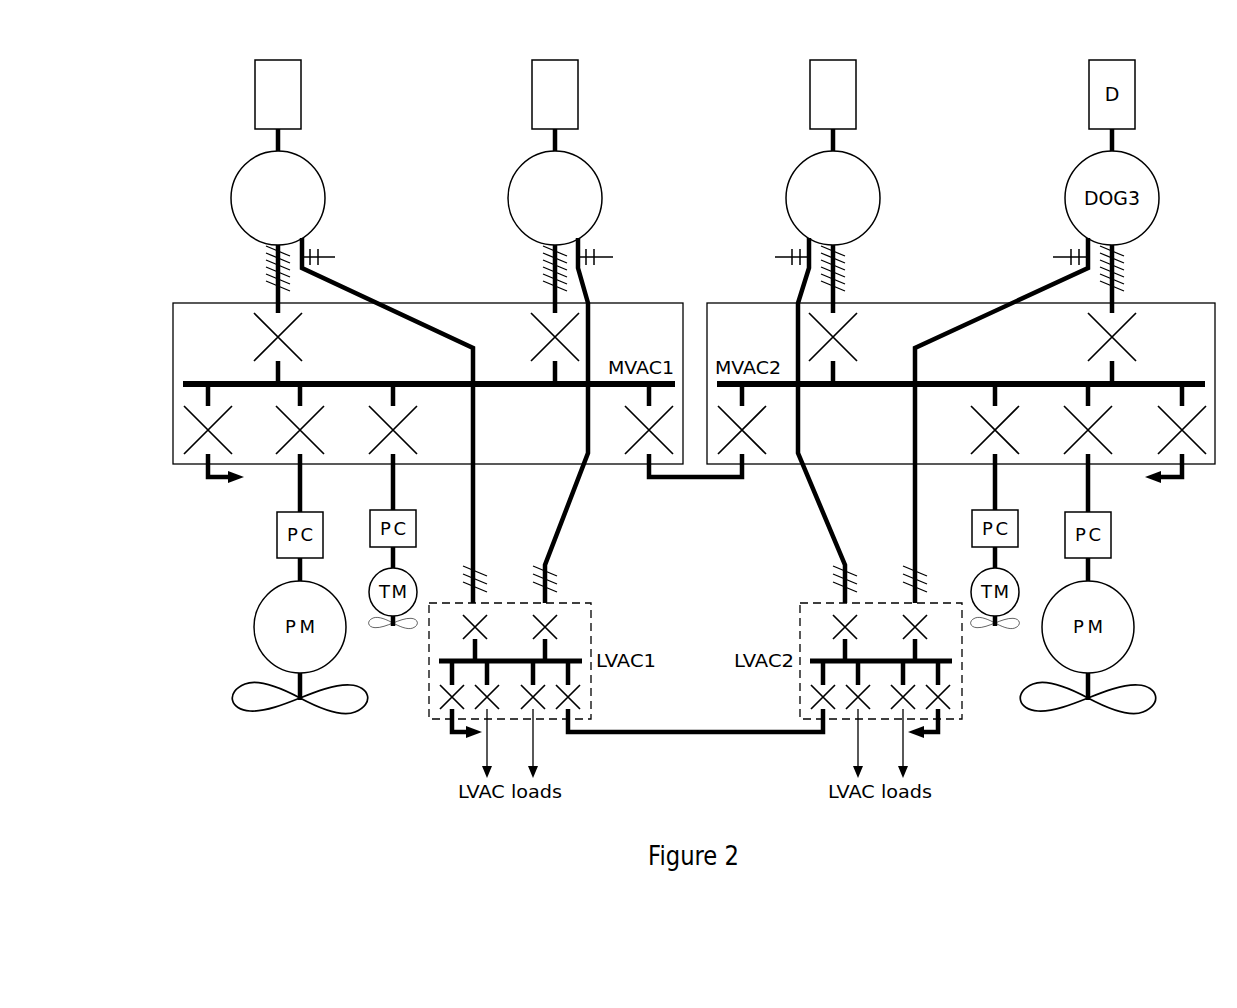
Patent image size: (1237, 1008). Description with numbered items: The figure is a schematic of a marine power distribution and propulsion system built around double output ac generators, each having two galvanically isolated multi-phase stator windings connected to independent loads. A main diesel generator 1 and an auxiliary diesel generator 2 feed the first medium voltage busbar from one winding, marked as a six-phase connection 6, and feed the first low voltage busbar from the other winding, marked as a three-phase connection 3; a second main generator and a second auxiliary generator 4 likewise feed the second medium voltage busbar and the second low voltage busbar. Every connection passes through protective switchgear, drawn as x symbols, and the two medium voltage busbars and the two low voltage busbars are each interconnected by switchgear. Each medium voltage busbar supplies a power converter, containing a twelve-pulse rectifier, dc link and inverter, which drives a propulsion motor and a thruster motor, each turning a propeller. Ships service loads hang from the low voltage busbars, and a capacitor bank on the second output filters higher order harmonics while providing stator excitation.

The six-phase stator winding connection 6 is at (271, 268).
The three-phase stator winding connection 3 is at (467, 579).
The diesel generator set DOG1 1 is at (278, 186).
The diesel generator set DOG2 2 is at (555, 186).
The diesel generator set DOG4 4 is at (833, 186).